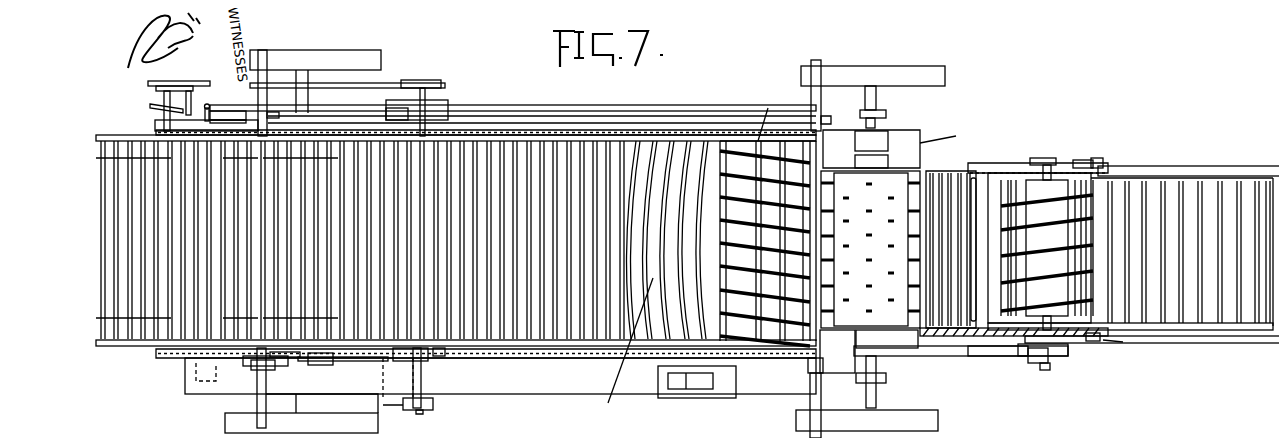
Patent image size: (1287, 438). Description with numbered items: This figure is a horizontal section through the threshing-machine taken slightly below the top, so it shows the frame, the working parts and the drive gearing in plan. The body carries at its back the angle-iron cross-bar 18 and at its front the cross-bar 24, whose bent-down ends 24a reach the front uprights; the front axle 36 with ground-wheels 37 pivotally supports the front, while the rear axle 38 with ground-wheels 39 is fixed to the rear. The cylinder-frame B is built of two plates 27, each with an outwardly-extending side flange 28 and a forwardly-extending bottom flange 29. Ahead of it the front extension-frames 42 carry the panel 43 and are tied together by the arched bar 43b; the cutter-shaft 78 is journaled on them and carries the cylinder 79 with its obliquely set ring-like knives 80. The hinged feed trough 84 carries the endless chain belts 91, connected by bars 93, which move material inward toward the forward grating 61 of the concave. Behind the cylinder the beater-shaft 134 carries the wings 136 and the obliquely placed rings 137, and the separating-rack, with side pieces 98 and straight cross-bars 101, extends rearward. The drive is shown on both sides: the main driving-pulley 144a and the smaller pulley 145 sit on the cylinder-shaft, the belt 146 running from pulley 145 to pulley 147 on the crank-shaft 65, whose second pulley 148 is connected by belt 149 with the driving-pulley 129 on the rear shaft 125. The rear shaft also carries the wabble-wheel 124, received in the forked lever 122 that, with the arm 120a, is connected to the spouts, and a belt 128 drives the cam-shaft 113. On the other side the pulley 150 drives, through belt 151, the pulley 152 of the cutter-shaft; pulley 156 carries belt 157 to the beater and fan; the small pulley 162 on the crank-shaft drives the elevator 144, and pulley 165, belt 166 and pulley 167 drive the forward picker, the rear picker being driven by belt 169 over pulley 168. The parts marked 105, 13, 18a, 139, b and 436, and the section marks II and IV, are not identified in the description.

The straight cross-bars 101 is at (362, 240).
The curved grate bars 105 is at (671, 240).
The side pieces 98 is at (612, 128).
The frame rail 13 is at (542, 124).
The driving-belt 146 is at (690, 108).
The pulley 147 is at (452, 99).
The lever 122 is at (329, 110).
The second arm 120a is at (236, 104).
The cam-shaft 113 is at (212, 104).
The shaft 125 is at (148, 114).
The wabble-wheel 124 is at (142, 98).
The belt 128 is at (156, 90).
The belt 149 is at (190, 68).
The driving-pulley 129 is at (155, 78).
The cross-bar 18 is at (254, 42).
The ground-wheels 39 is at (305, 42).
The rear axle 38 is at (322, 68).
The bracket 18a is at (275, 245).
The second pulley 148 is at (418, 72).
The crank-shaft 65 is at (418, 82).
The pulley 162 is at (420, 402).
The belt 169 is at (248, 358).
The pulley 168 is at (275, 352).
The pulley 167 is at (322, 350).
The elevator 144 is at (340, 353).
The belt 166 is at (400, 353).
The second pulley 165 is at (432, 348).
The beater-shaft 134 is at (760, 128).
The rings 137 is at (765, 206).
The wings 136 is at (765, 249).
The rods 139 is at (765, 308).
The section line II is at (753, 114).
The section line IV is at (625, 350).
The cross-bar 24 is at (803, 91).
The bent-down portion of cross-bar 24a is at (775, 398).
The front axle 36 is at (870, 88).
The ground-wheels 37 is at (868, 60).
The smaller pulley 145 is at (875, 104).
The bolt b is at (868, 116).
The side flange 28 is at (870, 251).
The plates 27 is at (847, 152).
The main driving-pulley 144a is at (947, 131).
The bottom flange 29 is at (905, 142).
The cylinder-frame B is at (870, 249).
The pulley 150 is at (887, 339).
The second pulley 156 is at (872, 380).
The belt 157 is at (745, 372).
The forward grating 61 is at (982, 165).
The angular frame 42 is at (1030, 152).
The panel 43 is at (1075, 147).
The arched bar 43b is at (1090, 158).
The trough 84 is at (1188, 158).
The knives 80 is at (1047, 225).
The cylinder 79 is at (1047, 291).
The bars 93 is at (1189, 252).
The endless chain belt 91 is at (1205, 280).
The pulley 152 is at (1055, 340).
The belt 151 is at (1005, 348).
The cutter-shaft 78 is at (1037, 362).
The lug 436 is at (1127, 349).